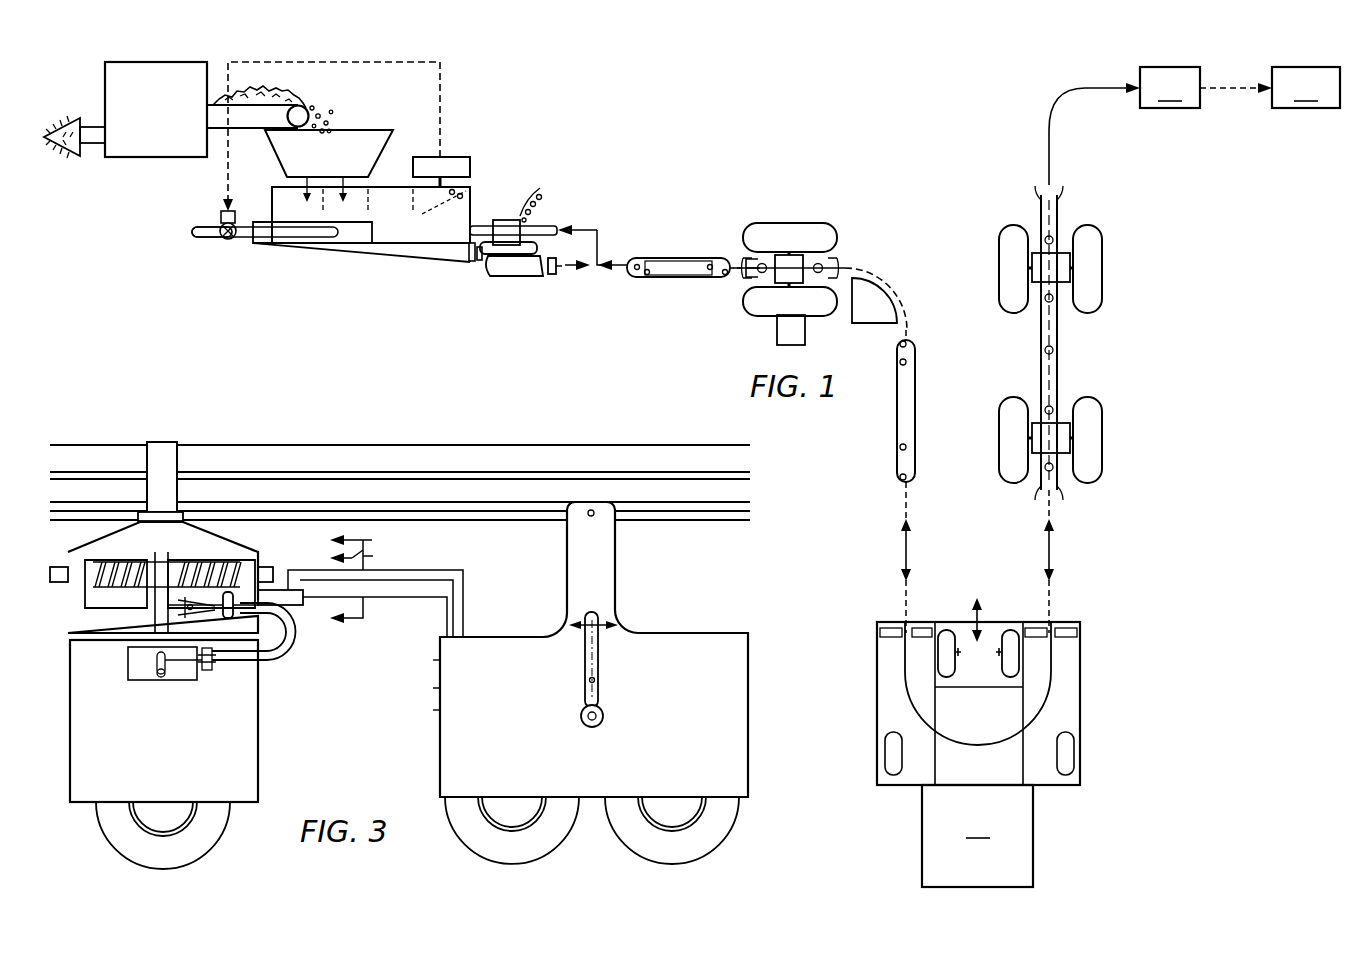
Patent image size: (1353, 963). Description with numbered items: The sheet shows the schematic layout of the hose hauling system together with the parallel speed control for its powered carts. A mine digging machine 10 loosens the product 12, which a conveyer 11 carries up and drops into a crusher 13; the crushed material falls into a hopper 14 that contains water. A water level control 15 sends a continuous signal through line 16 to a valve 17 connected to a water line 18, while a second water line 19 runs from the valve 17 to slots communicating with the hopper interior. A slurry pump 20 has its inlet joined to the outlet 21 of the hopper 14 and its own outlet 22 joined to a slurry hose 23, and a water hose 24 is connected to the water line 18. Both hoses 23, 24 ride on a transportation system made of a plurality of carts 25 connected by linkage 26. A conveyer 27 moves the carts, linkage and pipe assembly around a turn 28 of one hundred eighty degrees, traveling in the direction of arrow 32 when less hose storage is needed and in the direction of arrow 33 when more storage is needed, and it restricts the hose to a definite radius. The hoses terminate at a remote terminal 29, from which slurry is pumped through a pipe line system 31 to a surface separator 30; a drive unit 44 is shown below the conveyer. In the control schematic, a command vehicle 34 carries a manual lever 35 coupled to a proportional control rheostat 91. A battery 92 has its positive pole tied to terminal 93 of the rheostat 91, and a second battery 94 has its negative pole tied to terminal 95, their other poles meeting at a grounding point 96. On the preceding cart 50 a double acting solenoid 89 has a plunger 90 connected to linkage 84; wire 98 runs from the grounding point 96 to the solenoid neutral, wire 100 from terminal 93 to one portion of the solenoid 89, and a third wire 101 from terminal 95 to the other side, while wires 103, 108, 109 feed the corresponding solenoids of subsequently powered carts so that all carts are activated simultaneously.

In FIG. 1, the mine digging machine 10 is at (160, 148).
In FIG. 1, the conveyer 11 is at (262, 112).
In FIG. 1, the product 12 is at (316, 108).
In FIG. 1, the crusher 13 is at (352, 142).
In FIG. 1, the hopper 14 is at (383, 243).
In FIG. 1, the water level control 15 is at (448, 160).
In FIG. 1, the line 16 is at (413, 63).
In FIG. 1, the valve 17 is at (231, 240).
In FIG. 1, the water line 18 is at (207, 233).
In FIG. 1, the water line 19 is at (312, 238).
In FIG. 1, the slurry pump 20 is at (536, 280).
In FIG. 1, the outlet 21 is at (470, 262).
In FIG. 1, the outlet 22 is at (556, 276).
In FIG. 1, the slurry hose 23 is at (640, 262).
In FIG. 1, the hose 24 is at (680, 272).
In FIG. 1, the carts 25 is at (795, 225).
In FIG. 1, the linkage 26 is at (1053, 353).
In FIG. 1, the conveyer 27 is at (1086, 692).
In FIG. 1, the 180° turn 28 is at (968, 745).
In FIG. 1, the remote terminal 29 is at (1170, 87).
In FIG. 1, the surface separator 30 is at (1302, 112).
In FIG. 1, the system 31 is at (1246, 86).
In FIG. 1, the arrow 32 is at (972, 603).
In FIG. 1, the arrow 33 is at (985, 632).
In FIG. 3, the command vehicle 34 is at (695, 655).
In FIG. 3, the manual lever 35 is at (603, 612).
In FIG. 1, the drive unit 44 is at (977, 836).
In FIG. 3, the cart 50 is at (245, 742).
In FIG. 3, the linkage 84 is at (265, 610).
In FIG. 3, the solenoid 89 is at (300, 603).
In FIG. 3, the plunger 90 is at (250, 592).
In FIG. 3, the proportional control rheostat 91 is at (560, 672).
In FIG. 3, the battery 92 is at (505, 724).
In FIG. 3, the terminal 93 is at (535, 712).
In FIG. 3, the second battery 94 is at (508, 640).
In FIG. 3, the terminal 95 is at (487, 665).
In FIG. 3, the grounding point 96 is at (442, 687).
In FIG. 3, the wire 98 is at (433, 661).
In FIG. 3, the wire 100 is at (425, 711).
In FIG. 3, the third wire 101 is at (441, 637).
In FIG. 3, the wire 103 is at (412, 607).
In FIG. 3, the wire 108 is at (371, 550).
In FIG. 3, the wire 109 is at (357, 618).